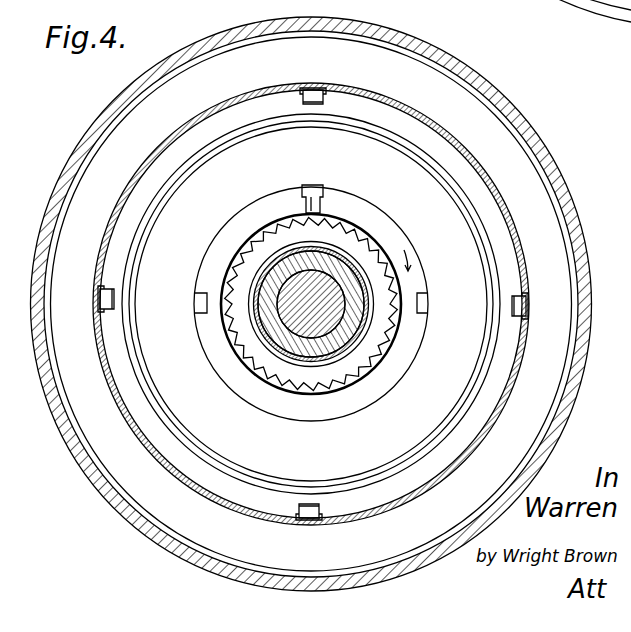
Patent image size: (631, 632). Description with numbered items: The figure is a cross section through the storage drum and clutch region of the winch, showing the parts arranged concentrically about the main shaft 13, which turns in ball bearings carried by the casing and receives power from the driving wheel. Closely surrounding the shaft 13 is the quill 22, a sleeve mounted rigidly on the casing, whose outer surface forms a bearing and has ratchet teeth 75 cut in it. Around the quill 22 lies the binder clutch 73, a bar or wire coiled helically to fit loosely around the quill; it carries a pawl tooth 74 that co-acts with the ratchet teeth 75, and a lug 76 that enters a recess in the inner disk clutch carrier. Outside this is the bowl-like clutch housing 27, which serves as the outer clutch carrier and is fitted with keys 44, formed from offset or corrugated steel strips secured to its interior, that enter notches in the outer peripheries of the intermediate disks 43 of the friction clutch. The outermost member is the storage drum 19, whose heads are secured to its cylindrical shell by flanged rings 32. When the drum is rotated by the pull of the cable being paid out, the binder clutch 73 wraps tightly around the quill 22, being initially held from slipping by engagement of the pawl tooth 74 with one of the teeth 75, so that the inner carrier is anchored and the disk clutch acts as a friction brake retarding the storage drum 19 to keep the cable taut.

The main shaft 13 is at (338, 308).
The storage drum 19 is at (569, 181).
The quill 22 is at (268, 360).
The clutch housing 27 is at (521, 257).
The flanged ring 32 is at (537, 130).
The intermediate disk 43 is at (219, 437).
The key 44 is at (310, 106).
The binder clutch 73 is at (227, 335).
The pawl tooth 74 is at (326, 394).
The ratchet teeth 75 is at (369, 363).
The lug 76 is at (314, 190).